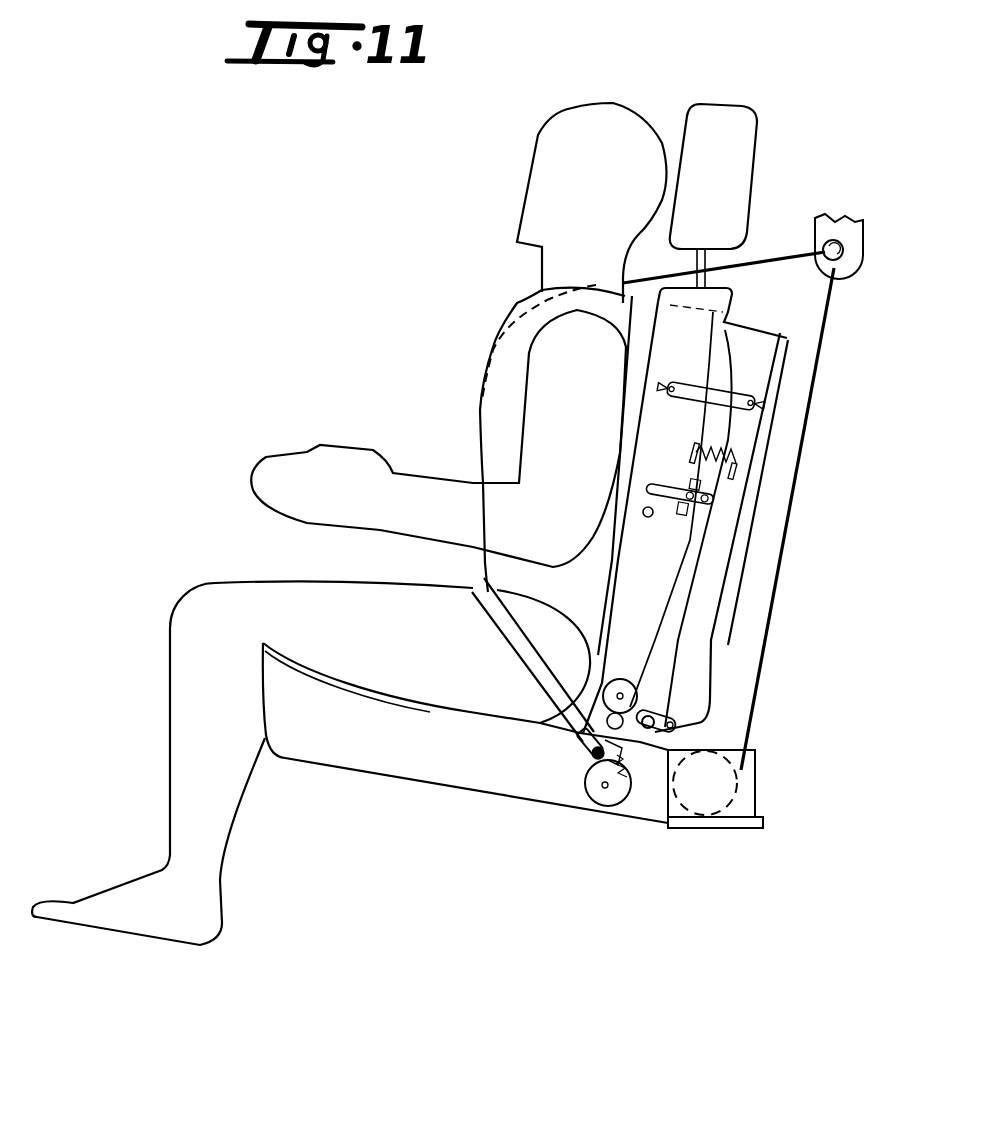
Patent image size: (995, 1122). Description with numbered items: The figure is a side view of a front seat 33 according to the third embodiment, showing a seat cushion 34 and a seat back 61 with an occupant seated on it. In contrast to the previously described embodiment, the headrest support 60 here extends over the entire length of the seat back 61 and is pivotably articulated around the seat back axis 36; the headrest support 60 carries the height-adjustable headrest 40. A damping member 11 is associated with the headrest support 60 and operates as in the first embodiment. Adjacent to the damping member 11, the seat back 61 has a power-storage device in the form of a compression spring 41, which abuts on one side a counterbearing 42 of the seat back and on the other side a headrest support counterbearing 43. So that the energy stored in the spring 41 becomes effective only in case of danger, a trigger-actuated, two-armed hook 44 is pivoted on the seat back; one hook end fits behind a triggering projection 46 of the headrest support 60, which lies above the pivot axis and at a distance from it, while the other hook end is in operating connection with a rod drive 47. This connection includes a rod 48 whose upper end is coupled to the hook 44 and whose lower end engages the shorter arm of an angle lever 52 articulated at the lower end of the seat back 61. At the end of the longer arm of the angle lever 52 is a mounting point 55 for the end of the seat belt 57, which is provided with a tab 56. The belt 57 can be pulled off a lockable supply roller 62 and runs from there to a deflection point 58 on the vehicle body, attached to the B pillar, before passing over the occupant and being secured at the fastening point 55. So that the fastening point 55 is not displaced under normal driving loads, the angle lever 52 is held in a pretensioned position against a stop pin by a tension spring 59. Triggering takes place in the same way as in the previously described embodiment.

The damping member 11 is at (737, 390).
The front seat 33 is at (427, 812).
The seat cushion 34 is at (312, 735).
The seat back axis 36 is at (625, 693).
The headrest 40 is at (737, 147).
The spring 41 is at (730, 452).
The counterbearing 42 is at (742, 469).
The headrest support counterbearing 43 is at (690, 447).
The hook 44 is at (670, 492).
The triggering projection 46 is at (643, 493).
The rod drive 47 is at (700, 580).
The rod 48 is at (680, 650).
The angle lever 52 is at (650, 732).
The mounting point 55 is at (592, 752).
The tab 56 is at (590, 747).
The seat belt 57 is at (748, 730).
The deflection point 58 is at (835, 283).
The tension spring 59 is at (612, 765).
The headrest support 60 is at (703, 360).
The seat back 61 is at (707, 600).
The supply roller 62 is at (707, 797).